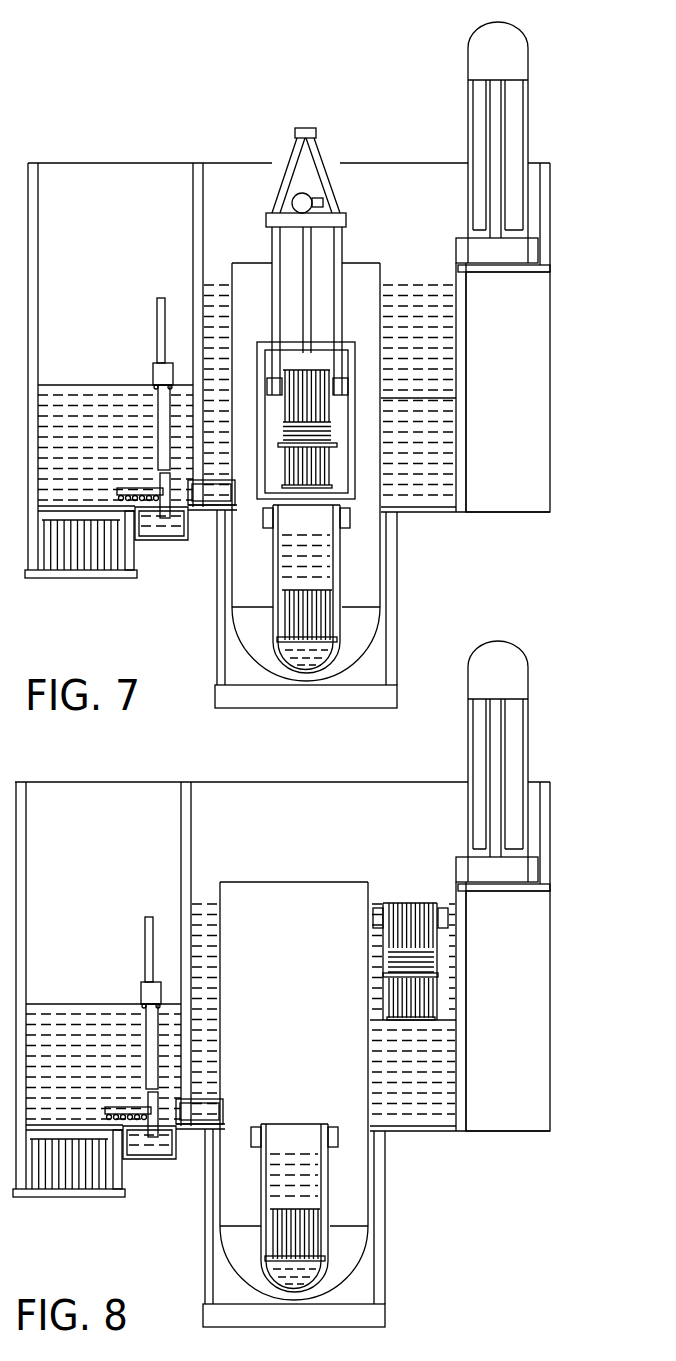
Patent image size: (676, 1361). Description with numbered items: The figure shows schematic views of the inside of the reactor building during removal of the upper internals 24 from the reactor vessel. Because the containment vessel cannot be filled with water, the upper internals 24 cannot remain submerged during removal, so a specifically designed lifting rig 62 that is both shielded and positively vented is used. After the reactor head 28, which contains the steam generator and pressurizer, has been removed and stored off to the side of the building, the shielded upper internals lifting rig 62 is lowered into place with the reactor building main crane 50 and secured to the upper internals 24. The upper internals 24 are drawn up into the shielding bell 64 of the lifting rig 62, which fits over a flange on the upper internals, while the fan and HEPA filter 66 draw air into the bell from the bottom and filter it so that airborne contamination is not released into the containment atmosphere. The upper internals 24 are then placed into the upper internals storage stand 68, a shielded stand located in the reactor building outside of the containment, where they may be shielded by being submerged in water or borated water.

In FIG. 7, the reactor building main crane 50 is at (294, 137).
In FIG. 7, the fan and HEPA filter 66 is at (318, 194).
In FIG. 7, the upper internals lifting rig 62 is at (350, 305).
In FIG. 7, the upper internals storage stand 68 is at (415, 397).
In FIG. 8, the upper internals storage stand 68 is at (443, 1020).
In FIG. 7, the shielding bell 64 is at (350, 474).
In FIG. 8, the reactor head 28 is at (523, 662).
In FIG. 8, the upper internals 24 is at (435, 953).